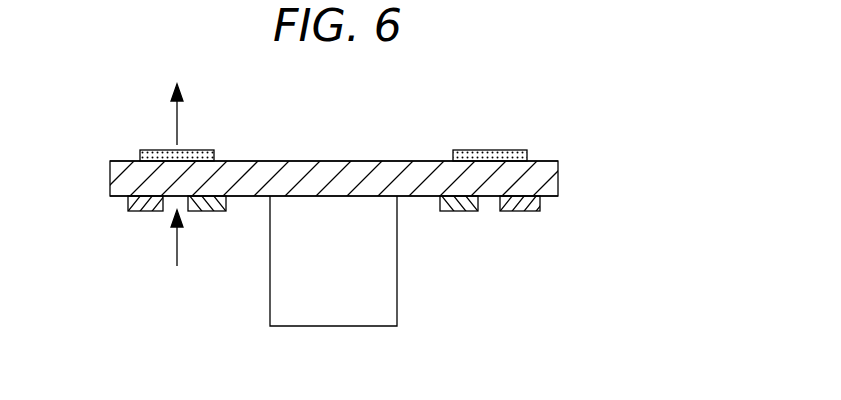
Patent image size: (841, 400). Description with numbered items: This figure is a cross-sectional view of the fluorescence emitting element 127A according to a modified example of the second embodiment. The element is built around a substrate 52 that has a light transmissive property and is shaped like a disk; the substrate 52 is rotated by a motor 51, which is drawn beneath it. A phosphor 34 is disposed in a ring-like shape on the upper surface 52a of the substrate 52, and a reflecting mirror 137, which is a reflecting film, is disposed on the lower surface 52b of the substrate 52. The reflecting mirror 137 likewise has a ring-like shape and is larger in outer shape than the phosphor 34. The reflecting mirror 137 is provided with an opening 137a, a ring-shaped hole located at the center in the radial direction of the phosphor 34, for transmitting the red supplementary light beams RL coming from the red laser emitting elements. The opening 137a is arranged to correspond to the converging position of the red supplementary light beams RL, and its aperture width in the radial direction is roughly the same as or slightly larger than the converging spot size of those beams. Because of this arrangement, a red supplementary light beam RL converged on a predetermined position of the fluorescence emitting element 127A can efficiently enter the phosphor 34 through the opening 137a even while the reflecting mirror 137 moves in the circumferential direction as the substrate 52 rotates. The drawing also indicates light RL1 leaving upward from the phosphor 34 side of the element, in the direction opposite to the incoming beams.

The fluorescence emitting element 127A is at (570, 119).
The substrate 52 is at (553, 176).
The upper surface 52a is at (553, 162).
The lower surface 52b is at (553, 198).
The phosphor 34 is at (146, 150).
The reflecting mirror 137 is at (142, 212).
The opening 137a is at (490, 212).
The motor 51 is at (385, 297).
The reflected light RL1 is at (178, 112).
The red supplementary light beam RL is at (178, 250).